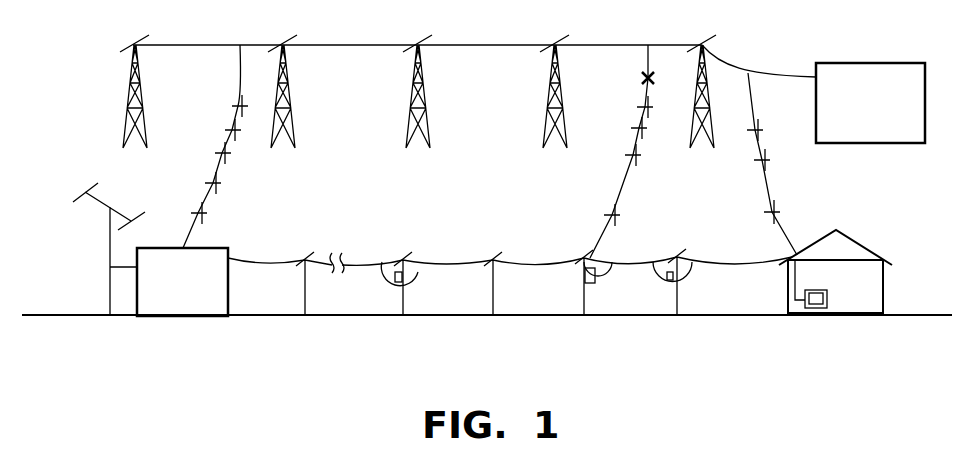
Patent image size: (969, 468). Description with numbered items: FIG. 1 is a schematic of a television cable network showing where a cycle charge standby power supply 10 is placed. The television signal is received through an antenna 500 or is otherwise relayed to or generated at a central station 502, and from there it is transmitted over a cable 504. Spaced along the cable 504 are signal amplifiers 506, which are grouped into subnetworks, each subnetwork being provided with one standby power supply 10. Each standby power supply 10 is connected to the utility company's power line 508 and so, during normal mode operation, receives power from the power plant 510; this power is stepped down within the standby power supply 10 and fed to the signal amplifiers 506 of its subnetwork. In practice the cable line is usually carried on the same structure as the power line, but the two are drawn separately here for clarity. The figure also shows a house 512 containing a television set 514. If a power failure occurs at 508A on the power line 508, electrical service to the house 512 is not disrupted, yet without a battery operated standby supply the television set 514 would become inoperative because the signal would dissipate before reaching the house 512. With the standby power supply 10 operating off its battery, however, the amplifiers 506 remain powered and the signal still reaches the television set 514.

The standby power supply 10 is at (585, 276).
The antenna 500 is at (117, 209).
The central station 502 is at (217, 248).
The cable 504 is at (438, 263).
The signal amplifiers 506 is at (396, 282).
The power line 508 is at (474, 45).
The power failure 508A is at (642, 78).
The power plant 510 is at (832, 63).
The house 512 is at (853, 303).
The television set 514 is at (816, 290).